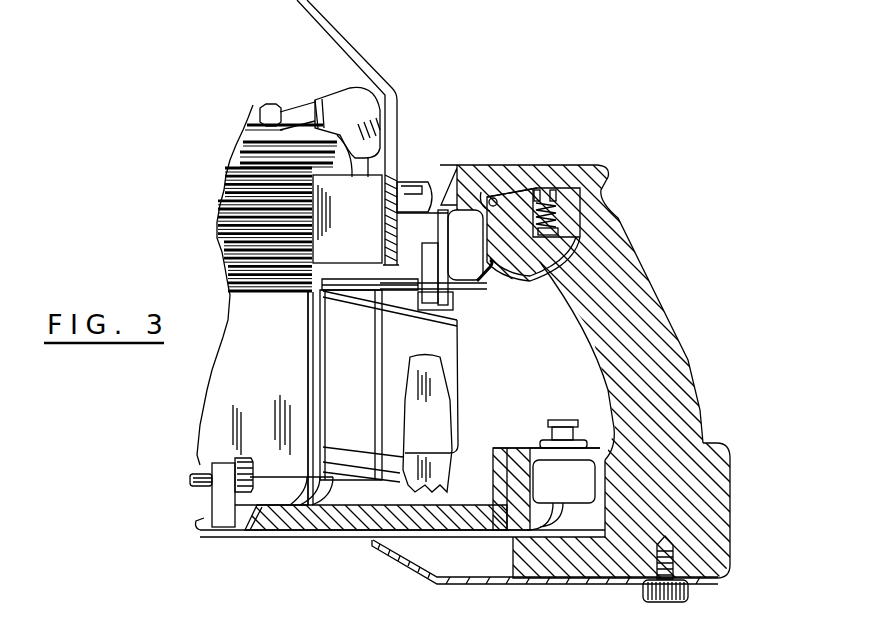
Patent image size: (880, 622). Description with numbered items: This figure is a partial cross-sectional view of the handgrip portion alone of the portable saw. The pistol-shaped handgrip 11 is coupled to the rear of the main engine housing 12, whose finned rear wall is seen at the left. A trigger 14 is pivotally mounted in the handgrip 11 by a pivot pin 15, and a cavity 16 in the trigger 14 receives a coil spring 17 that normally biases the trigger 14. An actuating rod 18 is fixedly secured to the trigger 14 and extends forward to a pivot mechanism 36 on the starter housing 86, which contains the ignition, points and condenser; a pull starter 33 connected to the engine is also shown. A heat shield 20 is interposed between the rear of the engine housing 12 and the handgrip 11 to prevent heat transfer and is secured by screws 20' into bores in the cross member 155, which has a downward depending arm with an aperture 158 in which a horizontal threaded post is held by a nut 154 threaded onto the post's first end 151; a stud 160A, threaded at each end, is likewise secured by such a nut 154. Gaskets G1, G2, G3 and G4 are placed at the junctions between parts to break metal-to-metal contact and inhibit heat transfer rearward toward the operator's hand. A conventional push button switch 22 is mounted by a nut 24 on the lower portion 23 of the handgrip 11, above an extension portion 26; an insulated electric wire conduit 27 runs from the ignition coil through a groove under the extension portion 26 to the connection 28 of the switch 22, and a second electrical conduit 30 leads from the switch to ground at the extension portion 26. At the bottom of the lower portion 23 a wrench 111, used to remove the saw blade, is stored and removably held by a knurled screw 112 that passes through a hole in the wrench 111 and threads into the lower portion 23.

The handgrip 11 is at (672, 322).
The main engine housing 12 is at (262, 390).
The trigger 14 is at (522, 193).
The pivot pin 15 is at (489, 197).
The cavity 16 is at (558, 214).
The coil spring 17 is at (560, 237).
The actuating rod 18 is at (465, 290).
The heat shield 20 is at (372, 132).
The screws 20' is at (320, 121).
The push button switch 22 is at (565, 420).
The lower portion 23 is at (730, 523).
The nut 24 is at (545, 447).
The extension portion 26 is at (327, 525).
The insulated electric wire conduit 27 is at (201, 537).
The connection 28 is at (580, 490).
The second electrical conduit 30 is at (562, 519).
The pull starter 33 is at (436, 450).
The pivot mechanism 36 is at (352, 300).
The starter housing 86 is at (368, 390).
The wrench 111 is at (403, 557).
The knurled screw 112 is at (688, 592).
The first end 151 is at (455, 292).
The nut 154 is at (455, 300).
The cross member 155 is at (427, 218).
The aperture 158 is at (425, 315).
The stud 160A is at (195, 488).
The gap G1 is at (313, 316).
The gasket G2 is at (376, 430).
The gasket G3 is at (507, 448).
The gasket G4 is at (392, 234).